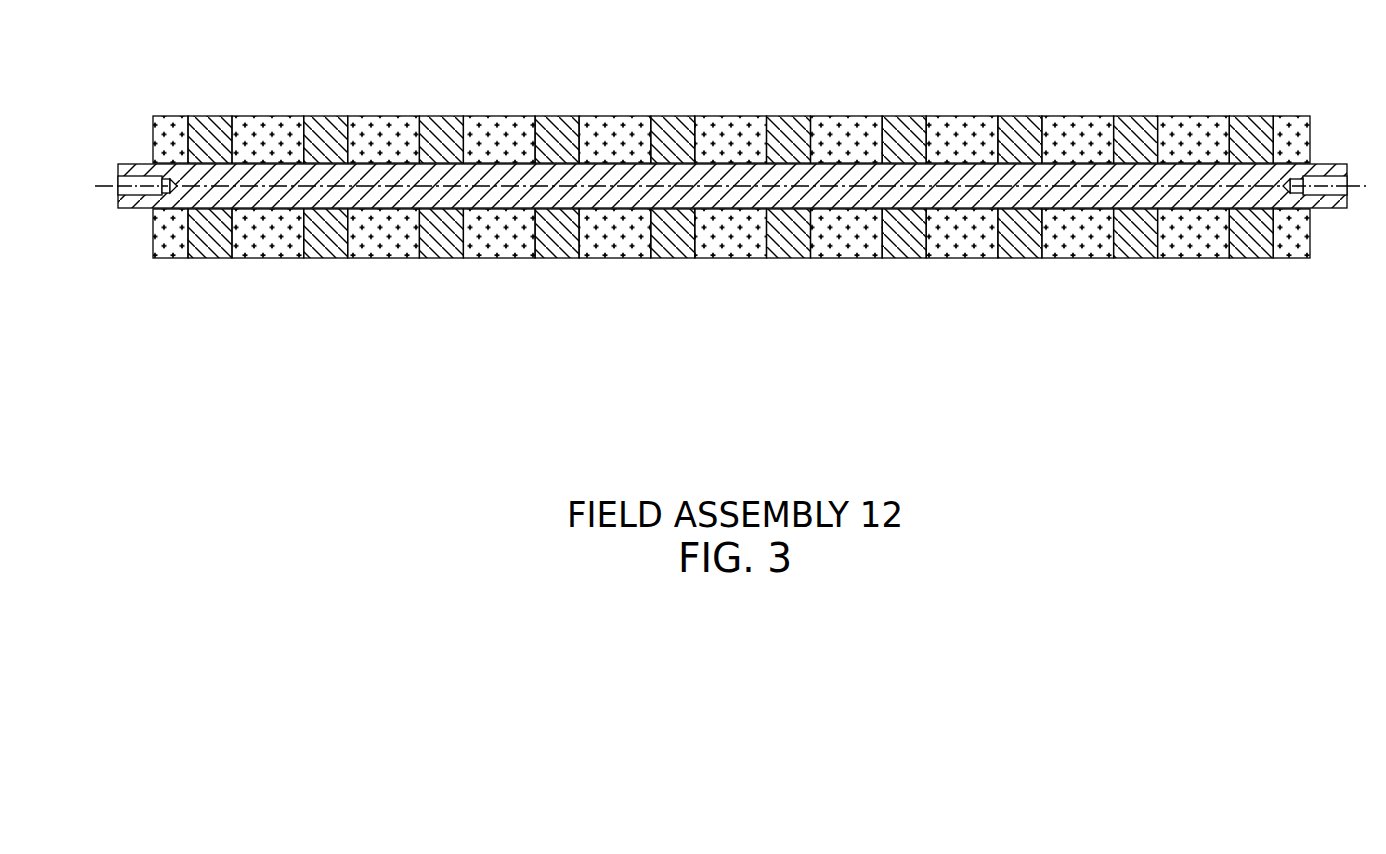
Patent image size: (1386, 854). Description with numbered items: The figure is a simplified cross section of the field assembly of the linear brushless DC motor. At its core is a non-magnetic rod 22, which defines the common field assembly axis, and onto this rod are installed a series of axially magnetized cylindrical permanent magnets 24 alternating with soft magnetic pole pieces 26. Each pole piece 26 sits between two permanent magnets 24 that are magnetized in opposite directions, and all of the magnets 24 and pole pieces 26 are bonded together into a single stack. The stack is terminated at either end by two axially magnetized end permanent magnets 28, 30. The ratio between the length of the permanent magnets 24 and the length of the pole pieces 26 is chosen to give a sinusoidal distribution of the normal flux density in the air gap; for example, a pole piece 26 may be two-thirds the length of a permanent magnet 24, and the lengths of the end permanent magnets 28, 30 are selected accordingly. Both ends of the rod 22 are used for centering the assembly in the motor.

The non-magnetic rod 22 is at (708, 160).
The permanent magnets 24 is at (730, 143).
The pole pieces 26 is at (730, 143).
The end permanent magnet 28 is at (318, 244).
The end permanent magnet 30 is at (1145, 244).